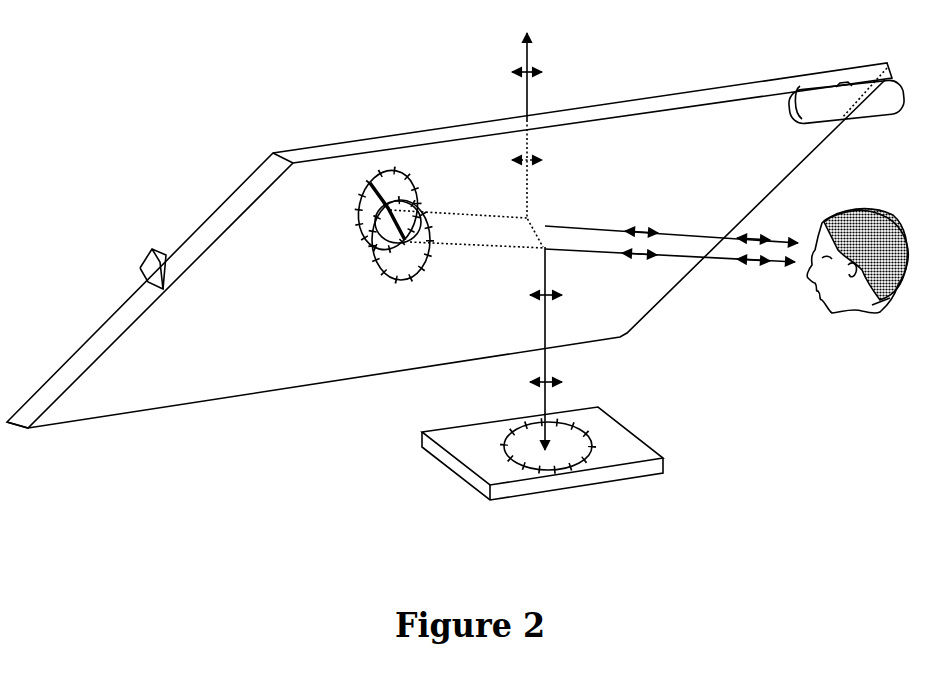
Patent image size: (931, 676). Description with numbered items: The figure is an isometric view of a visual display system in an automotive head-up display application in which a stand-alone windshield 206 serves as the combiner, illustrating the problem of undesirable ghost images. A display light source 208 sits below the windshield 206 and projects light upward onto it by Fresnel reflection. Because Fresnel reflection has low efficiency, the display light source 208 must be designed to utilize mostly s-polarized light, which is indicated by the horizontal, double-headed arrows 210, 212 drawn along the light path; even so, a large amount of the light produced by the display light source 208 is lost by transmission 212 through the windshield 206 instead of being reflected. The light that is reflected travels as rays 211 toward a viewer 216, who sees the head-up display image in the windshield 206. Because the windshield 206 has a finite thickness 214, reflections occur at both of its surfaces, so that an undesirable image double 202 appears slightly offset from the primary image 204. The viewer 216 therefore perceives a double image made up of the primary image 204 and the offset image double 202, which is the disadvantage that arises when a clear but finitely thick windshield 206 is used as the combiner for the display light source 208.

The undesirable image double 202 is at (368, 192).
The primary image 204 is at (398, 267).
The stand-alone windshield 206 is at (407, 137).
The display light source 208 is at (467, 477).
The double-headed arrows indicating s-polarized light 210 is at (567, 380).
The light rays / viewing beams 211 is at (748, 265).
The transmission 212 is at (540, 65).
The finite thickness 214 is at (143, 258).
The viewer 216 is at (875, 200).